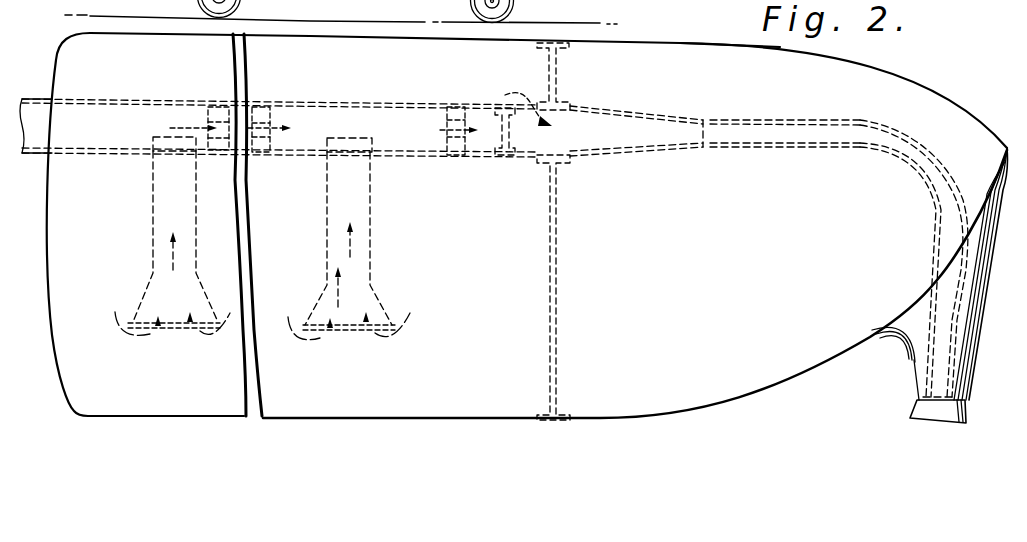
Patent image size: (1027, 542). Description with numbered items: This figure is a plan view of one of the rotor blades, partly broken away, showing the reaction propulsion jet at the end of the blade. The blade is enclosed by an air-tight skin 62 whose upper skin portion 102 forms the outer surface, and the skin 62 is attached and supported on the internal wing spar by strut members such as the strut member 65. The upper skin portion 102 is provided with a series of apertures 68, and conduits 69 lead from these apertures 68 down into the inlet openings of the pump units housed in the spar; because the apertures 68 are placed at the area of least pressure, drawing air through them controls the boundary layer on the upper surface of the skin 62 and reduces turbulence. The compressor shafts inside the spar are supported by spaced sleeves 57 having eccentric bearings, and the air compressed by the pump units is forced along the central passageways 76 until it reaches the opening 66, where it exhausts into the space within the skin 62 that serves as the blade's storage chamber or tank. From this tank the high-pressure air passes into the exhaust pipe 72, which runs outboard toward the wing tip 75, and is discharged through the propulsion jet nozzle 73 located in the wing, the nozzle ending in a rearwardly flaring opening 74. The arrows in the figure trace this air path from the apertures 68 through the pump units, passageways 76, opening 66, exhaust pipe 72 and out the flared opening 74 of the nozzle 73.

The upper skin portion 102 is at (527, 225).
The skin 62 is at (888, 58).
The wing tip 75 is at (990, 135).
The propulsion jet nozzle 73 is at (943, 347).
The rearwardly flaring opening 74 is at (937, 418).
The exhaust pipe 72 is at (808, 144).
The strut member 65 is at (557, 80).
The opening 66 is at (485, 145).
The spaced sleeves 57 is at (263, 108).
The central passageways 76 is at (215, 112).
The conduits 69 is at (163, 212).
The apertures 68 is at (182, 327).